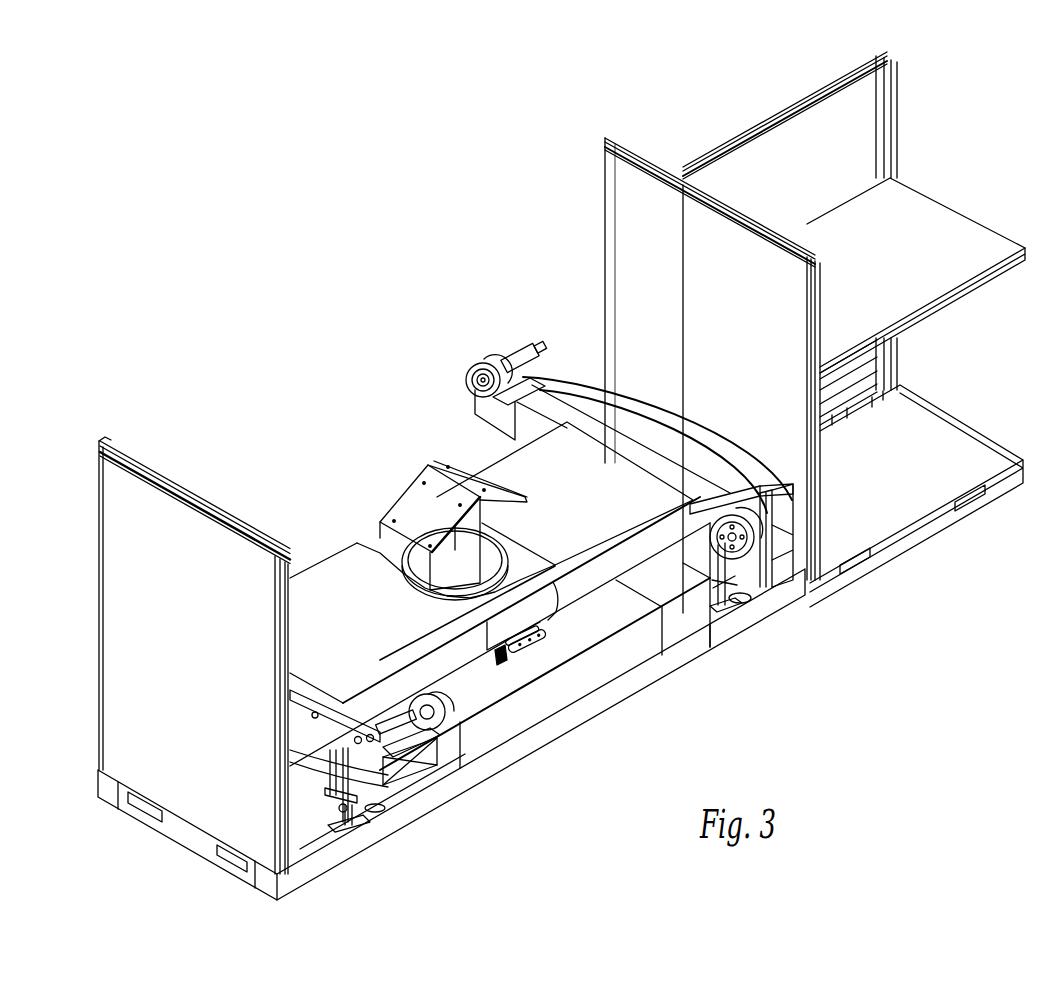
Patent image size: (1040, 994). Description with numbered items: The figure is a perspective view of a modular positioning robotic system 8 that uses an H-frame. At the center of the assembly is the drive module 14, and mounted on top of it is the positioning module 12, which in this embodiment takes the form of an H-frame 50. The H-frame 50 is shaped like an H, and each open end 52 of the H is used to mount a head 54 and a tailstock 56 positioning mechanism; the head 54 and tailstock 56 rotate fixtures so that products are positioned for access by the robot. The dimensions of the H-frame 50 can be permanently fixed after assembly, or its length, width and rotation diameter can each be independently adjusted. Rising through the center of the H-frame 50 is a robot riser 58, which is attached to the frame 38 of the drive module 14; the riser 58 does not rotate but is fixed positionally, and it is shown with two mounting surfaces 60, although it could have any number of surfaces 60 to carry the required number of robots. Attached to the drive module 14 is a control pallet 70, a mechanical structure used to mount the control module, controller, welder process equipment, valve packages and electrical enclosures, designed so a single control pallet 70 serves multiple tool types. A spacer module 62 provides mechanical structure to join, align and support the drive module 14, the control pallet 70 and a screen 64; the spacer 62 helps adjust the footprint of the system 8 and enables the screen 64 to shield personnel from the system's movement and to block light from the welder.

The modular positioning robotic system 8 is at (200, 271).
The positioning module 12 is at (528, 312).
The drive module 14 is at (587, 682).
The frame 38 is at (536, 636).
The H-frame 50 is at (500, 458).
The open end 52 is at (488, 407).
The head 54 is at (476, 379).
The tailstock 56 is at (410, 693).
The robot riser 58 is at (478, 556).
The mounting surface 60 is at (418, 496).
The spacer module 62 is at (184, 833).
The screen 64 is at (116, 556).
The control pallet 70 is at (905, 432).